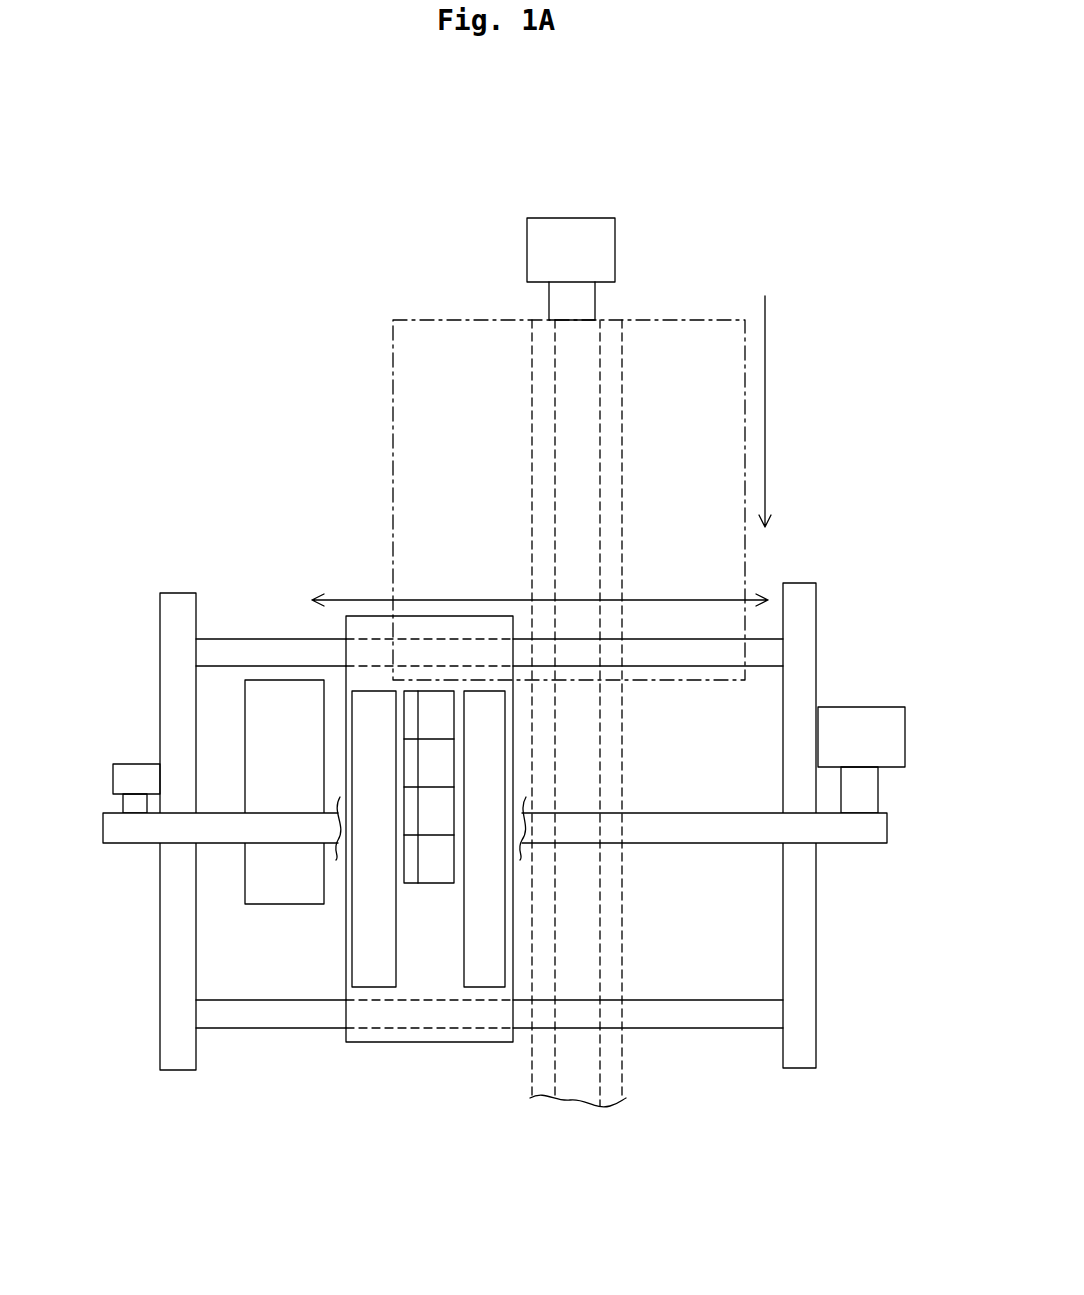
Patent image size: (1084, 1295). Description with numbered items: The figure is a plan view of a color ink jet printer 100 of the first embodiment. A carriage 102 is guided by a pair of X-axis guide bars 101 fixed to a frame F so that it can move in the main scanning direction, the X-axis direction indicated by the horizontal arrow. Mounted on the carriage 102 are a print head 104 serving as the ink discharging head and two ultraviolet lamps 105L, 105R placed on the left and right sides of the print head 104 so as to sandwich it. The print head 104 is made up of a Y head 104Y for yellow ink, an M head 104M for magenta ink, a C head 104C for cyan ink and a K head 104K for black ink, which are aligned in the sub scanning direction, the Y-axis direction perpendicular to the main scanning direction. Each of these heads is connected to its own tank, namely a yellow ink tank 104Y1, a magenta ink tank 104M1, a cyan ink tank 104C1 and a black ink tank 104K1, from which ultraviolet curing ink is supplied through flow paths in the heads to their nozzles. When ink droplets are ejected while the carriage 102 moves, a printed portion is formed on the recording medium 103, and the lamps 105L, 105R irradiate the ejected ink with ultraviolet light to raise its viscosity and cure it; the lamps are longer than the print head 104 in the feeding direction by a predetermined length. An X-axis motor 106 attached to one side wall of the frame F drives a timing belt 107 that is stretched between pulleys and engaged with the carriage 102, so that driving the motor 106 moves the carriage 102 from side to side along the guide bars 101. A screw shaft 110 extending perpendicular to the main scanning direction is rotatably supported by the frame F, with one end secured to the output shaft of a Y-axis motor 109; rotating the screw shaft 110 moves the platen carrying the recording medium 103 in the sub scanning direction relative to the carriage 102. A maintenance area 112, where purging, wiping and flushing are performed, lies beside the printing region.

The color ink jet printer 100 is at (212, 363).
The X-axis guide bar 101 is at (224, 648).
The carriage 102 is at (424, 990).
The recording medium 103 is at (716, 571).
The print head 104 is at (501, 660).
The Y head 104Y is at (443, 717).
The M head 104M is at (445, 768).
The C head 104C is at (443, 800).
The K head 104K is at (445, 860).
The yellow ink tank 104Y1 is at (413, 723).
The magenta ink tank 104M1 is at (413, 762).
The cyan ink tank 104C1 is at (413, 815).
The black ink tank 104K1 is at (413, 862).
The UV lamp 105L is at (372, 961).
The UV lamp 105R is at (492, 970).
The X-axis motor 106 is at (843, 707).
The timing belt 107 is at (764, 832).
The Y-axis motor 109 is at (615, 235).
The screw shaft 110 is at (597, 296).
The maintenance area 112 is at (273, 889).
The frame F is at (172, 998).